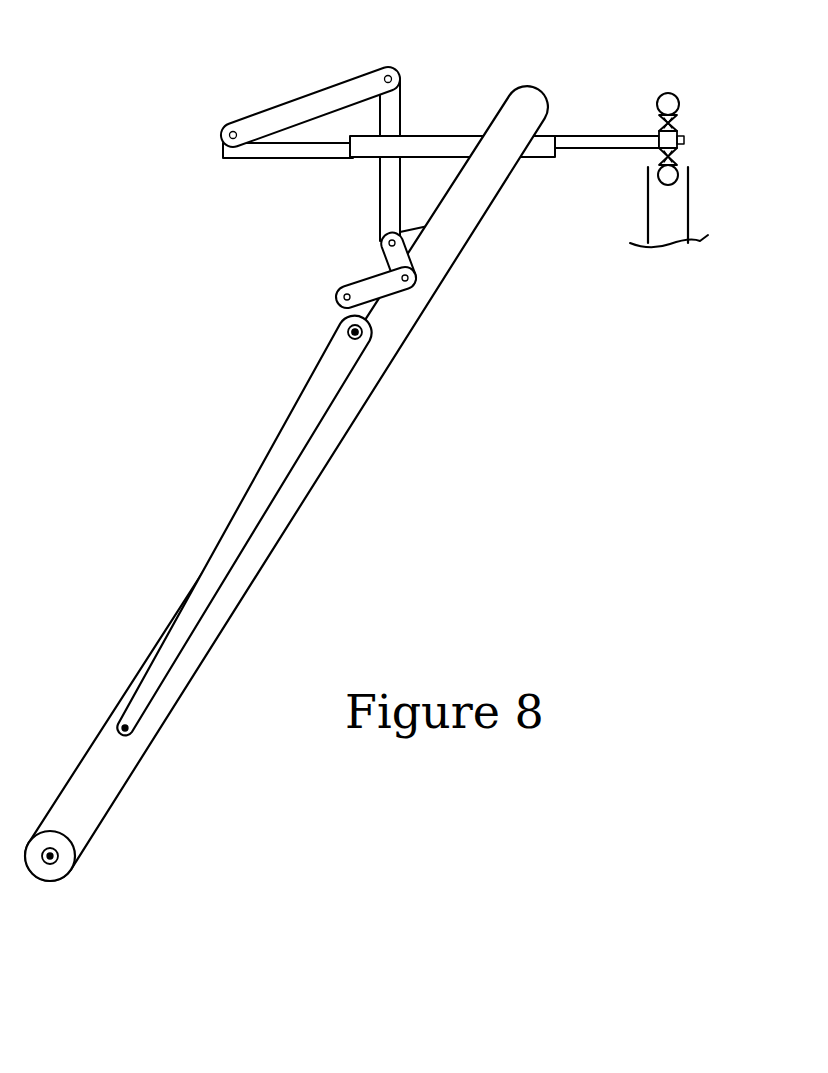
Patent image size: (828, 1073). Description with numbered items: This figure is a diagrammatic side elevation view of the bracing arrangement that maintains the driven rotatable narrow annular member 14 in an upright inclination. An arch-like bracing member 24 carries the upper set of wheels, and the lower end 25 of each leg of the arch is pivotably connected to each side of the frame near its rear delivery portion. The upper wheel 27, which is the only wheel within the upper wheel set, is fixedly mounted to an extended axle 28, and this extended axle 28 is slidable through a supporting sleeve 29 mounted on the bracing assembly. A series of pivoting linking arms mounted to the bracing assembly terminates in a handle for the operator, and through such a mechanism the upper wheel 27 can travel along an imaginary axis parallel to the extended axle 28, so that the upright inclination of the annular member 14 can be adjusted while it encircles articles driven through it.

The annular member 14 is at (698, 216).
The arch-like bracing member 24 is at (391, 343).
The lower end 25 is at (88, 861).
The upper wheel 27 is at (680, 110).
The extended axle 28 is at (582, 137).
The supporting sleeve 29 is at (460, 137).